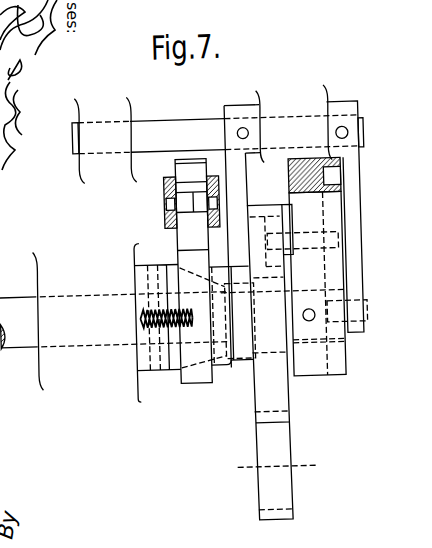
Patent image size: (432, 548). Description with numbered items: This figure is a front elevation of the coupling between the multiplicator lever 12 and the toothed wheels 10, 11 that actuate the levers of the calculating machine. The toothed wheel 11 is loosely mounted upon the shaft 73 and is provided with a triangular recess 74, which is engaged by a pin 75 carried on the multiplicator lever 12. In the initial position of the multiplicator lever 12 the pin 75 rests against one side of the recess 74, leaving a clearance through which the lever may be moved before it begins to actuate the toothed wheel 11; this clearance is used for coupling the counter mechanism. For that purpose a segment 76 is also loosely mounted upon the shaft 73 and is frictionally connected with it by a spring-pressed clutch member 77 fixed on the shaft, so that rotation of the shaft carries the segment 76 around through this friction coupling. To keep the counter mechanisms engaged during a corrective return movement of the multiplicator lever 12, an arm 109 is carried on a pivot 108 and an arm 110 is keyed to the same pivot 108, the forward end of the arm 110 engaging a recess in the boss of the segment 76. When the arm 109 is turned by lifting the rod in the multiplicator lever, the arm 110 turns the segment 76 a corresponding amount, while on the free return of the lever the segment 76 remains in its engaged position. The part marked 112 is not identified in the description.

The toothed wheel 10 is at (280, 490).
The toothed wheel 11 is at (280, 403).
The multiplicator lever 12 is at (323, 272).
The shaft 73 is at (88, 342).
The triangular recess 74 is at (274, 226).
The pin 75 is at (287, 233).
The segment 76 is at (190, 234).
The spring-pressed clutch member 77 is at (150, 370).
The pivot 108 is at (302, 122).
The arm 109 is at (352, 172).
The arm 110 is at (237, 132).
The collar 112 is at (230, 362).